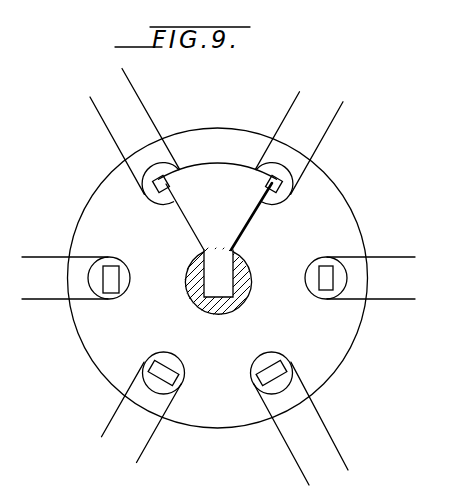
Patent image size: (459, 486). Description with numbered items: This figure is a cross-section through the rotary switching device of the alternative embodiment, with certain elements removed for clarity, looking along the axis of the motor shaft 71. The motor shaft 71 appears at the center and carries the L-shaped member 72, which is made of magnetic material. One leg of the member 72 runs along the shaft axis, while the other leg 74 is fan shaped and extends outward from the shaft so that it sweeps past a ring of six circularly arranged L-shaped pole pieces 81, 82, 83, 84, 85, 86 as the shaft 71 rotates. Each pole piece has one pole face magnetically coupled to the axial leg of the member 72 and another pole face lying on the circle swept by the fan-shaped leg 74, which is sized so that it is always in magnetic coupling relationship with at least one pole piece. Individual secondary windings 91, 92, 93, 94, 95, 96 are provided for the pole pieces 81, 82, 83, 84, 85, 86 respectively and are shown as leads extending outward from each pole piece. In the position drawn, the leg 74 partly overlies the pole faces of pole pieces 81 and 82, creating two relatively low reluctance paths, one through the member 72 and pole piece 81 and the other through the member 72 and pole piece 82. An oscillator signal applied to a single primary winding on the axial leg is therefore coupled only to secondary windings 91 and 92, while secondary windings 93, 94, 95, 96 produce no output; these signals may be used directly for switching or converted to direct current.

The motor shaft 71 is at (216, 312).
The L-shaped member 72 is at (223, 285).
The fan-shaped leg 74 is at (246, 225).
The pole piece 81 is at (158, 197).
The pole piece 82 is at (287, 196).
The pole piece 83 is at (325, 290).
The pole piece 84 is at (277, 364).
The pole piece 85 is at (163, 366).
The pole piece 86 is at (113, 293).
The secondary winding 91 is at (103, 124).
The secondary winding 92 is at (327, 128).
The secondary winding 93 is at (380, 265).
The secondary winding 94 is at (327, 430).
The secondary winding 95 is at (112, 413).
The secondary winding 96 is at (45, 256).